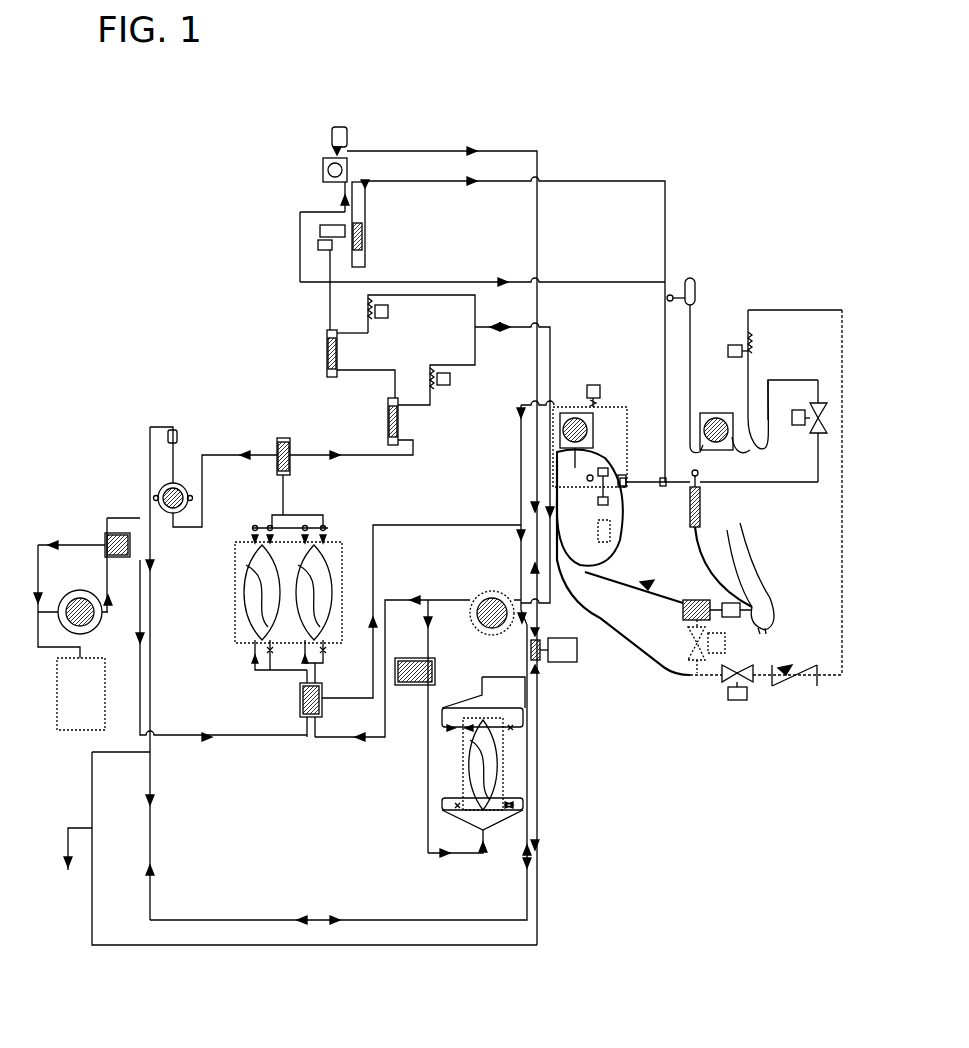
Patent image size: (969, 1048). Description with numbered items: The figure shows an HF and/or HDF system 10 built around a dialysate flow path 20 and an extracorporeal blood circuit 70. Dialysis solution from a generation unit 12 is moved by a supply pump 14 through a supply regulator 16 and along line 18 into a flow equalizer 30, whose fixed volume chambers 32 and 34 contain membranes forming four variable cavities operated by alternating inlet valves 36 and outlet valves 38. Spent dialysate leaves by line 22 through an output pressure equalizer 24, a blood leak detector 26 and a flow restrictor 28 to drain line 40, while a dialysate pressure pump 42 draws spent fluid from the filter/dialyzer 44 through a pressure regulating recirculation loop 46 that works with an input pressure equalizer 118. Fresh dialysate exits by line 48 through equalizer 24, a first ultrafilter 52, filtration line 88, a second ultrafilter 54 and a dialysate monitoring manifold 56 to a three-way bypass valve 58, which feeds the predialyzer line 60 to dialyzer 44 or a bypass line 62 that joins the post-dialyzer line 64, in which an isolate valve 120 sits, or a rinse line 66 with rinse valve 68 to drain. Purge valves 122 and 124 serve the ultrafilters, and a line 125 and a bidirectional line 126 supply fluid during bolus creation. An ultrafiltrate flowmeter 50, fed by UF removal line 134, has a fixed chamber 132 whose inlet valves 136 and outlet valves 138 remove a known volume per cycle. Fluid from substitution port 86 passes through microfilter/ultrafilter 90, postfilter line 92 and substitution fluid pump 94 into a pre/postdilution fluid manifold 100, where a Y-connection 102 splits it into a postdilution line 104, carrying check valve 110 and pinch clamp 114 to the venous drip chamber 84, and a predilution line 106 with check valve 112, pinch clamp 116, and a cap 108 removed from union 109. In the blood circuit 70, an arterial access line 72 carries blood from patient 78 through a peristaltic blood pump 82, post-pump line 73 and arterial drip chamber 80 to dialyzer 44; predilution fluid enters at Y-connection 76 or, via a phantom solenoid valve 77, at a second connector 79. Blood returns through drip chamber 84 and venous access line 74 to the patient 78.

The HF and/or HDF system 10 is at (697, 146).
The dialysate generation unit 12 is at (82, 735).
The supply pump 14 is at (80, 590).
The supply regulator 16 is at (106, 530).
The line 18 is at (139, 668).
The dialysate flow path 20 is at (229, 368).
The line 22 is at (282, 492).
The output pressure equalizer 24 is at (274, 445).
The blood leak detector 26 is at (182, 486).
The flow restrictor 28 is at (179, 432).
The flow equalizer or balancing chamber 30 is at (236, 645).
The fixed volume chamber 32 is at (342, 558).
The fixed volume chamber 34 is at (242, 602).
The inlet valves 36 is at (260, 666).
The outlet valves 38 is at (252, 529).
The drain line 40 is at (72, 826).
The dialysate pressure pump 42 is at (480, 594).
The filter/dialyzer 44 is at (648, 486).
The pressure regulating recirculation loop 46 is at (374, 700).
The line 48 is at (352, 458).
The ultrafiltrate flowmeter 50 is at (512, 768).
The first ultrafilter 52 is at (386, 420).
The second ultrafilter 54 is at (326, 350).
The dialysate monitoring manifold 56 is at (366, 260).
The three-way bypass valve 58 is at (330, 150).
The predialyzer dialysate line 60 is at (610, 183).
The bypass line 62 is at (405, 150).
The post-dialyzer line 64 is at (519, 476).
The rinse line 66 is at (538, 895).
The rinse valve 68 is at (578, 656).
The extracorporeal or blood circuit 70 is at (618, 596).
The arterial access line 72 is at (730, 603).
The line 73 is at (603, 466).
The venous access line 74 is at (698, 556).
The Y-connection 76 is at (606, 470).
The solenoid valve 77 is at (727, 645).
The patient 78 is at (752, 567).
The second Y-connector or T-connector 79 is at (683, 615).
The arterial drip chamber 80 is at (598, 535).
The peristaltic blood pump 82 is at (594, 426).
The venous drip chamber 84 is at (702, 506).
The substitution port 86 is at (335, 210).
The filtration line 88 is at (592, 282).
The microfilter/ultrafilter 90 is at (692, 277).
The postfilter line 92 is at (694, 350).
The substitution fluid pump 94 is at (706, 414).
The pre/postdilution fluid manifold 100 is at (838, 305).
The Y-connection 102 is at (758, 452).
The postdilution line 104 is at (820, 378).
The predilution line 106 is at (840, 595).
The cap 108 is at (735, 358).
The union 109 is at (748, 328).
The check valve 110 is at (786, 380).
The check valve 112 is at (800, 680).
The pinch clamp 114 is at (799, 427).
The pinch clamp 116 is at (740, 702).
The input pressure equalizer 118 is at (300, 705).
The isolate valve 120 is at (602, 390).
The purge valve 122 is at (441, 388).
The purge valve 124 is at (390, 312).
The line 125 is at (150, 685).
The line / pigtail 126 is at (152, 835).
The fixed volume chamber 132 is at (465, 775).
The UF removal line 134 is at (428, 846).
The inlet valves 136 is at (440, 815).
The outlet valves 138 is at (455, 735).